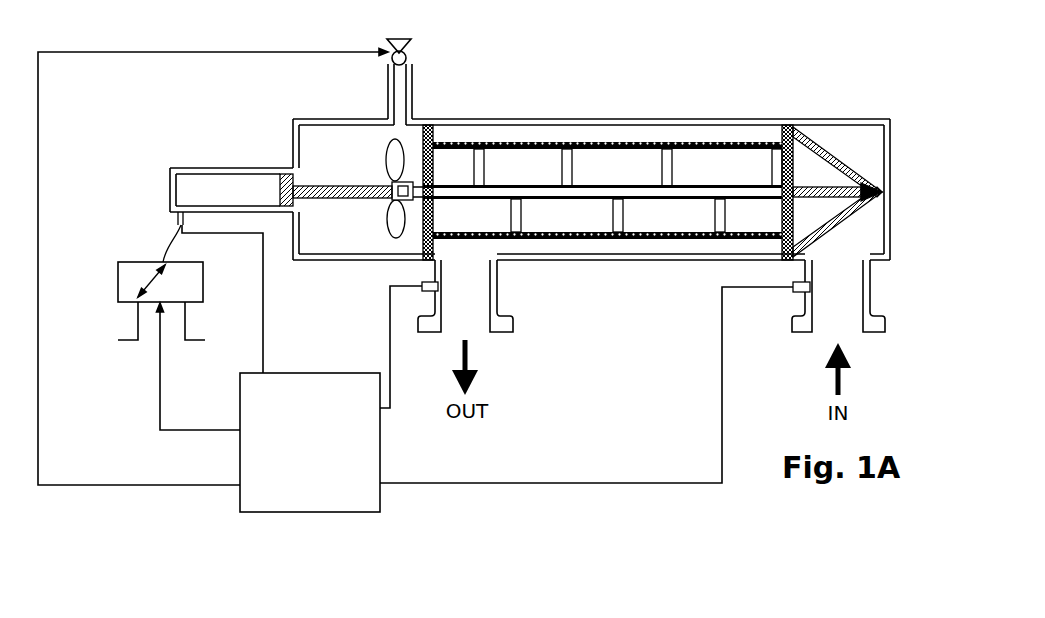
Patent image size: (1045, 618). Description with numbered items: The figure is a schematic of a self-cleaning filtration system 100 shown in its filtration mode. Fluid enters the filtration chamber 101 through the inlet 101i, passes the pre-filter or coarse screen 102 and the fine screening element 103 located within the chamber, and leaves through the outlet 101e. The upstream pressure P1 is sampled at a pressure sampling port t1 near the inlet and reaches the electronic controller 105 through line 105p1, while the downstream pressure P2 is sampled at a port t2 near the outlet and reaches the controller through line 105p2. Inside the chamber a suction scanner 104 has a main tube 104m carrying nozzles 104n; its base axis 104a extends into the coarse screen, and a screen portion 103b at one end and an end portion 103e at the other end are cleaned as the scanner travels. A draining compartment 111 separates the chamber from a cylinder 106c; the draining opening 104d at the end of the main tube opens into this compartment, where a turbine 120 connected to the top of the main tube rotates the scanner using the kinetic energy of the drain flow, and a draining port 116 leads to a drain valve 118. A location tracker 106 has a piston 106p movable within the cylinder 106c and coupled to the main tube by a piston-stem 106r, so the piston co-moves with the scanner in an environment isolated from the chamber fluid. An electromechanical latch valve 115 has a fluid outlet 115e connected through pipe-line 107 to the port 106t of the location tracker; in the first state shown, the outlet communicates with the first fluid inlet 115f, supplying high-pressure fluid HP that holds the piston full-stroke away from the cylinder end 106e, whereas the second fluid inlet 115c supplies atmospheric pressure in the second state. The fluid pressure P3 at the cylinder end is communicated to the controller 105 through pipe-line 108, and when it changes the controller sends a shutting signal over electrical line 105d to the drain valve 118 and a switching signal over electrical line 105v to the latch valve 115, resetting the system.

The filtration system 100 is at (735, 60).
The filtration chamber 101 is at (680, 133).
The outlet of the filtration chamber 101e is at (480, 327).
The inlet of the filtration chamber 101i is at (830, 327).
The pre-filter (coarse screen) 102 is at (848, 166).
The screening element (fine screen) 103 is at (690, 242).
The screen portion at first end of the screening element 103b is at (772, 143).
The end portion of the screening element 103e is at (436, 130).
The suction scanner 104 is at (656, 221).
The base axis of the main tube 104a is at (811, 185).
The draining-opening 104d is at (406, 201).
The main tube 104m is at (594, 186).
The nozzle 104n is at (565, 150).
The electronic controller 105 is at (295, 460).
The electrical line 105d is at (38, 410).
The line 105p1 is at (605, 483).
The line 105p2 is at (393, 394).
The electrical line 105v is at (183, 432).
The location tracker 106 is at (170, 118).
The cylinder 106c is at (190, 182).
The cylinder end 106e is at (170, 188).
The piston 106p is at (280, 181).
The piston-stem 106r is at (342, 186).
The port of the location tracker 106t is at (180, 215).
The pipe-line 107 is at (185, 237).
The pipe-line 108 is at (265, 313).
The draining compartment 111 is at (325, 243).
The electromechanical latch valve 115 is at (118, 284).
The second fluid inlet 115c is at (183, 323).
The fluid outlet 115e is at (163, 260).
The first fluid inlet 115f is at (138, 342).
The draining port 116 is at (404, 95).
The drain valve 118 is at (412, 52).
The turbine 120 is at (395, 165).
The upstream pressure P1 is at (840, 281).
The downstream pressure P2 is at (479, 281).
The fluid pressure in the cylinder P3 is at (217, 186).
The pressure sampling port t1 is at (790, 290).
The pressure sampling port t2 is at (425, 292).